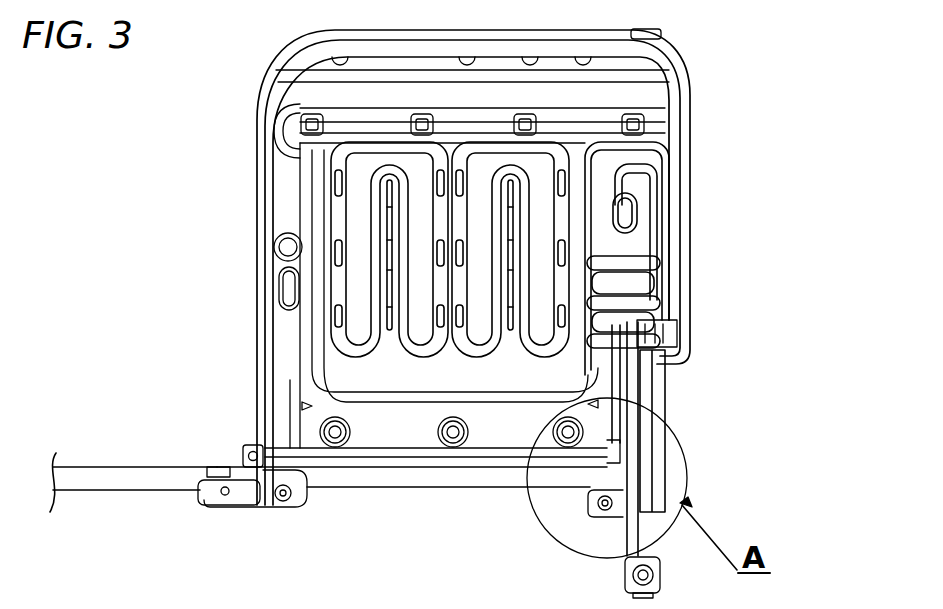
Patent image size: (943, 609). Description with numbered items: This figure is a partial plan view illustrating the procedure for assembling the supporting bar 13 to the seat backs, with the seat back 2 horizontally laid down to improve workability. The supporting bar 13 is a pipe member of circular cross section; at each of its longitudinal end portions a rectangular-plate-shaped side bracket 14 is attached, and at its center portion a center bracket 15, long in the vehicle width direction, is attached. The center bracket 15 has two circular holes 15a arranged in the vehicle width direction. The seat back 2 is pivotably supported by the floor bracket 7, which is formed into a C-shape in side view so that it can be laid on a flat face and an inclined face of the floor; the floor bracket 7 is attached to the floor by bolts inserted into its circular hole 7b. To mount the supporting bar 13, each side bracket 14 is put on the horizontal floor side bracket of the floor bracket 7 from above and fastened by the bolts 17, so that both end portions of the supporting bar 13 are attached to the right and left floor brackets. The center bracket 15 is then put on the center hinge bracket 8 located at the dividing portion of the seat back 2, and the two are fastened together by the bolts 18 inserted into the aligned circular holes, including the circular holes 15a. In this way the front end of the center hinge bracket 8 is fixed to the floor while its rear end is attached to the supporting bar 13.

The seat back 2 is at (690, 120).
The floor bracket 7 is at (660, 489).
The circular hole 7b is at (660, 583).
The center hinge bracket 8 is at (305, 470).
The supporting bar 13 is at (152, 467).
The side bracket 14 is at (590, 502).
The center bracket 15 is at (246, 507).
The circular hole 15a is at (213, 497).
The bolt 17 is at (603, 508).
The bolt 18 is at (286, 500).